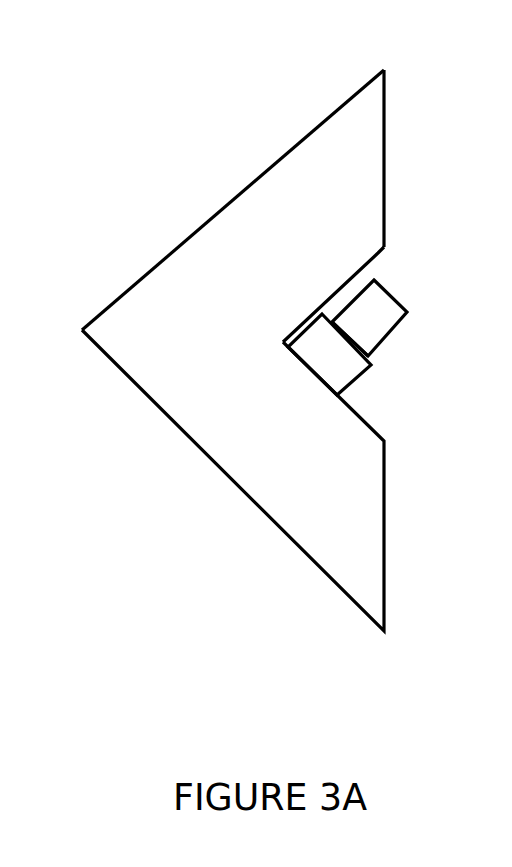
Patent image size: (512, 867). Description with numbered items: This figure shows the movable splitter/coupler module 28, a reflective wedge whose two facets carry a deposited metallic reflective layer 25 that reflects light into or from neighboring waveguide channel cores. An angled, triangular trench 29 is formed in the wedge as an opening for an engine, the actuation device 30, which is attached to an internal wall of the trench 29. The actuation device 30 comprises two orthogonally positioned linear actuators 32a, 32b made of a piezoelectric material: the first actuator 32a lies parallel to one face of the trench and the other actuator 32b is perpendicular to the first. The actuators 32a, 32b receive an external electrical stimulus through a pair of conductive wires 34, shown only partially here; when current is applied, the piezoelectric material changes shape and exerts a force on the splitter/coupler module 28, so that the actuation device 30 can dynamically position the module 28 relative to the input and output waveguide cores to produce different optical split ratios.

The reflective layer 25 is at (160, 410).
The splitter/coupler module 28 is at (228, 238).
The trench 29 is at (386, 254).
The actuation device 30 is at (407, 309).
The first actuator 32a is at (362, 330).
The second actuator 32b is at (337, 382).
The wires 34 is at (399, 300).